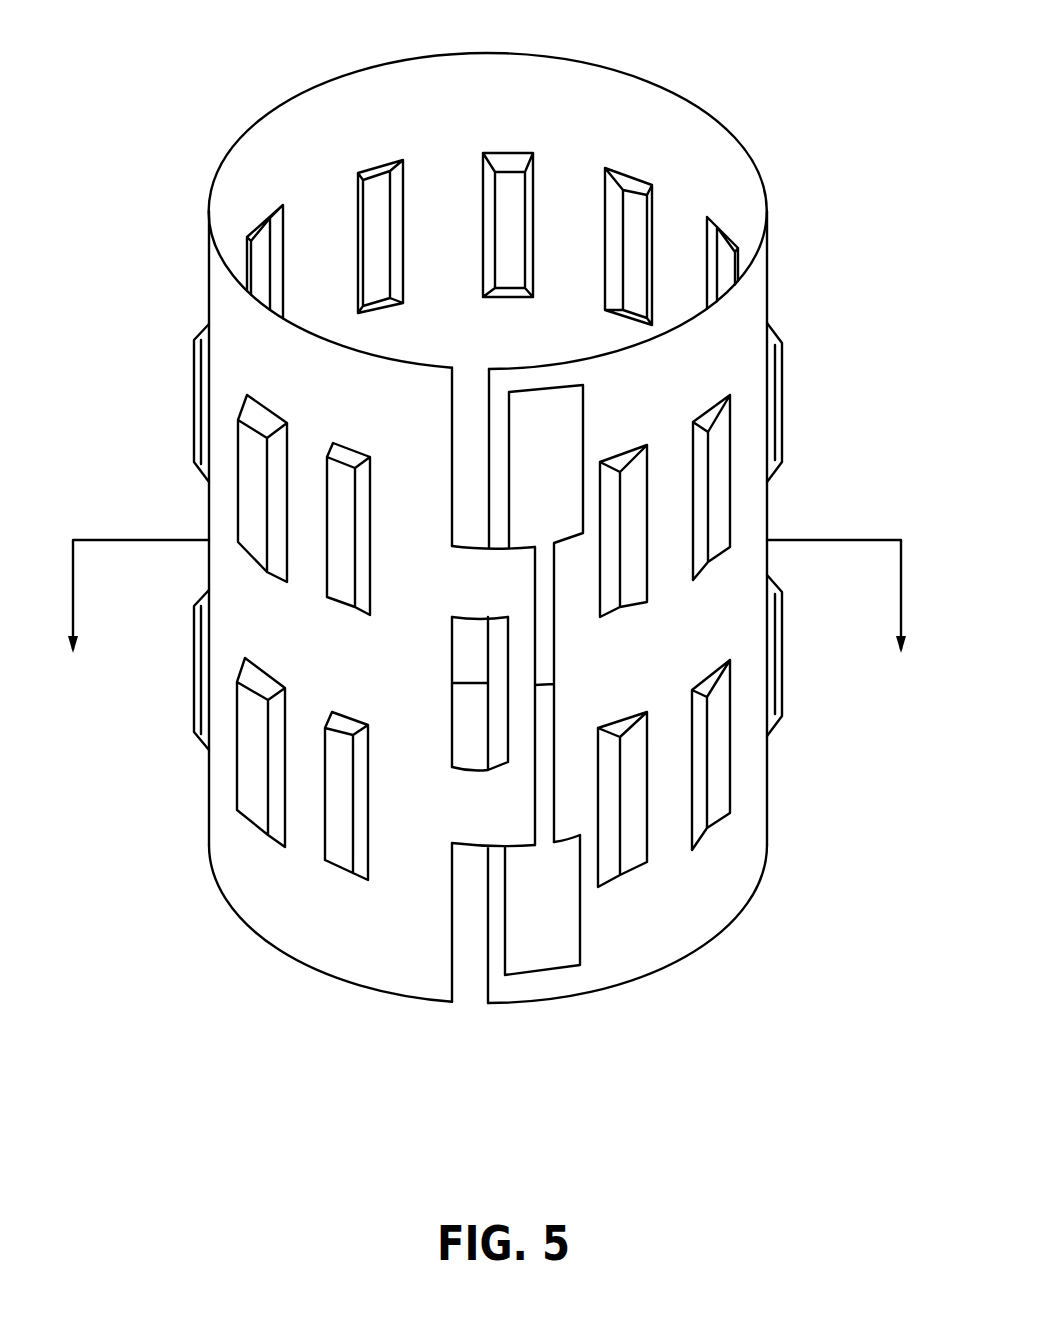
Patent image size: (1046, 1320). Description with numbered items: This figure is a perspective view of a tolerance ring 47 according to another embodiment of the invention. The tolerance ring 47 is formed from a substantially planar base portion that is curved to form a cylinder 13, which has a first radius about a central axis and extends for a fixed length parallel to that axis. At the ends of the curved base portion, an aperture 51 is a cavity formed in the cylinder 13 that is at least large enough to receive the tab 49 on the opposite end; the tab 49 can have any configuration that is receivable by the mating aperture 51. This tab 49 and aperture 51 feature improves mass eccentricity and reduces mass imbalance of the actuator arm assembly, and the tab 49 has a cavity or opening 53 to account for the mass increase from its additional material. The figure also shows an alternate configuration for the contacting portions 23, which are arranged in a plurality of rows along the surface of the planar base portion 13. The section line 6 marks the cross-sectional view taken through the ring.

The tolerance ring 47 is at (798, 108).
The cylinder 13 is at (748, 501).
The contacting portions 23 is at (720, 470).
The tab 49 is at (470, 580).
The aperture 51 is at (545, 432).
The opening 53 is at (470, 728).
The section line 6- 6 is at (487, 616).